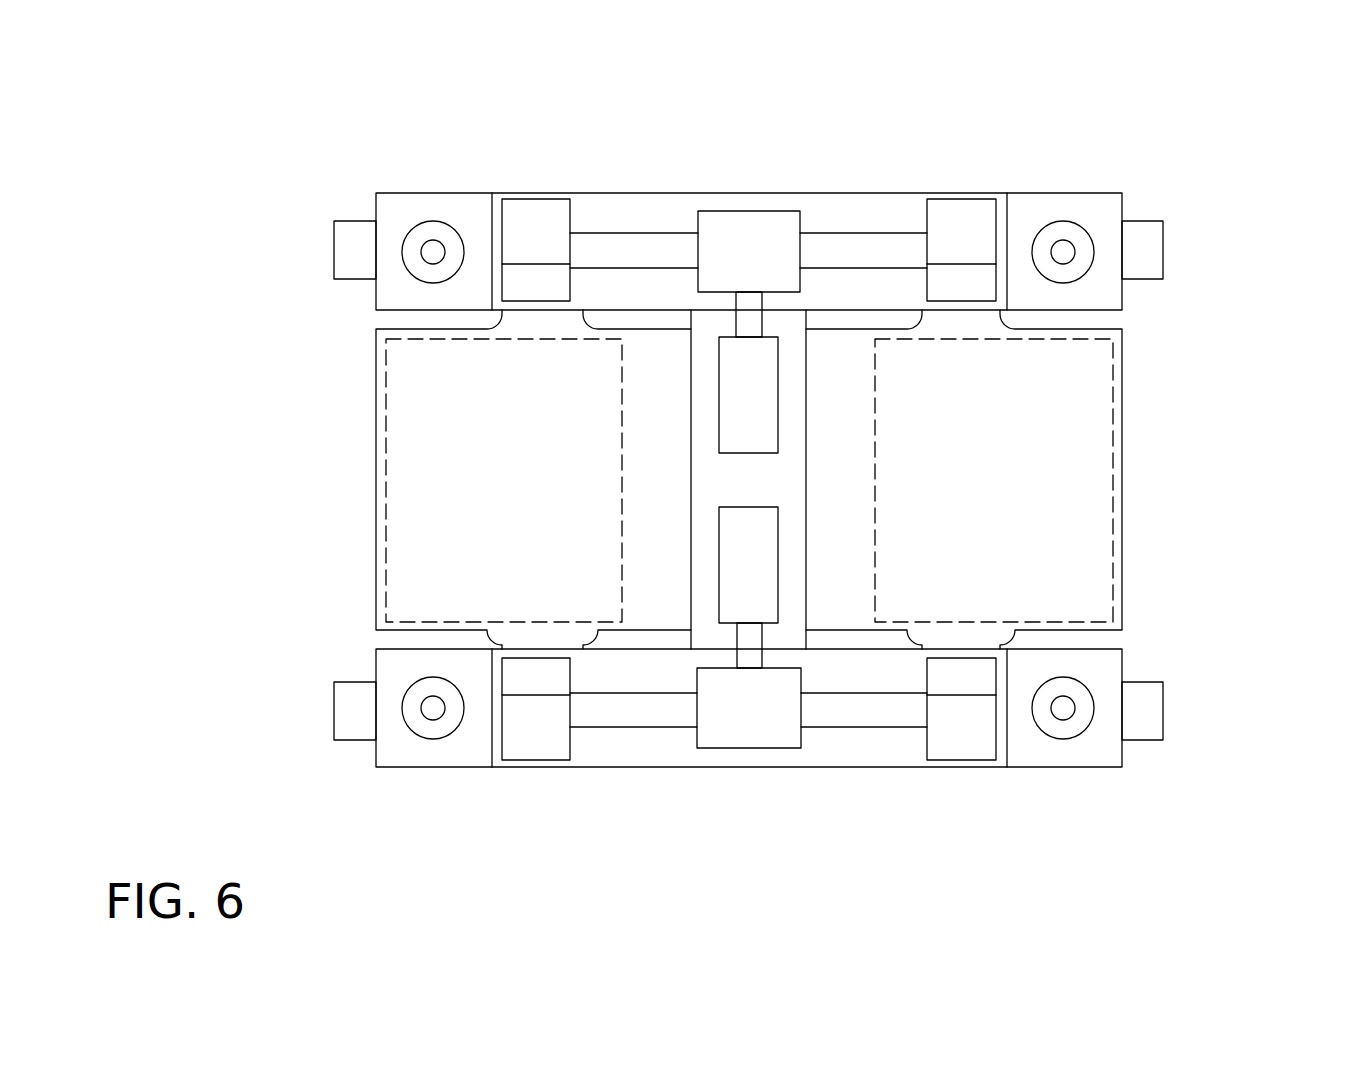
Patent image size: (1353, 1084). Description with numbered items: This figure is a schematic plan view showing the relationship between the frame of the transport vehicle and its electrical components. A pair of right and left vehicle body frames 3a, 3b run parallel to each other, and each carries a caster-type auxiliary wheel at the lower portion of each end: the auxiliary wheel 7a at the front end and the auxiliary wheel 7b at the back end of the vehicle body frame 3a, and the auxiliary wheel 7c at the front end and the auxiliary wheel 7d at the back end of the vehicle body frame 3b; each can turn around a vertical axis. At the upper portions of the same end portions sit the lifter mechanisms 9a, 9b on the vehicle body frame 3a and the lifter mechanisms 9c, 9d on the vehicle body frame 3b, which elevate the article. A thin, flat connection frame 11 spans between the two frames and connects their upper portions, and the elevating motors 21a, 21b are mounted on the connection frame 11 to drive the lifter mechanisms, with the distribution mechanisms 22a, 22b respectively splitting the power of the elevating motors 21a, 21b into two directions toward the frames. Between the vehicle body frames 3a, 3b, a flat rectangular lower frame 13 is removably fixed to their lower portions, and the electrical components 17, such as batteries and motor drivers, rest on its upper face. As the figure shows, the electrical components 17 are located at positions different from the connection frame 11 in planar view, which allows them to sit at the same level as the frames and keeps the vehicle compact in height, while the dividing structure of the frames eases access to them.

The vehicle body frame 3a is at (716, 163).
The vehicle body frame 3b is at (677, 796).
The auxiliary wheel 7a is at (355, 243).
The auxiliary wheel 7b is at (1143, 243).
The auxiliary wheel 7c is at (356, 720).
The auxiliary wheel 7d is at (1143, 720).
The lifter mechanism 9a is at (537, 196).
The lifter mechanism 9b is at (961, 196).
The lifter mechanism 9c is at (537, 765).
The lifter mechanism 9d is at (961, 766).
The connection frame 11 is at (750, 483).
The lower frame 13 is at (1123, 478).
The electrical components 17 is at (1113, 407).
The elevating motor 21a is at (754, 400).
The elevating motor 21b is at (755, 567).
The distribution mechanism 22a is at (755, 240).
The distribution mechanism 22b is at (750, 720).